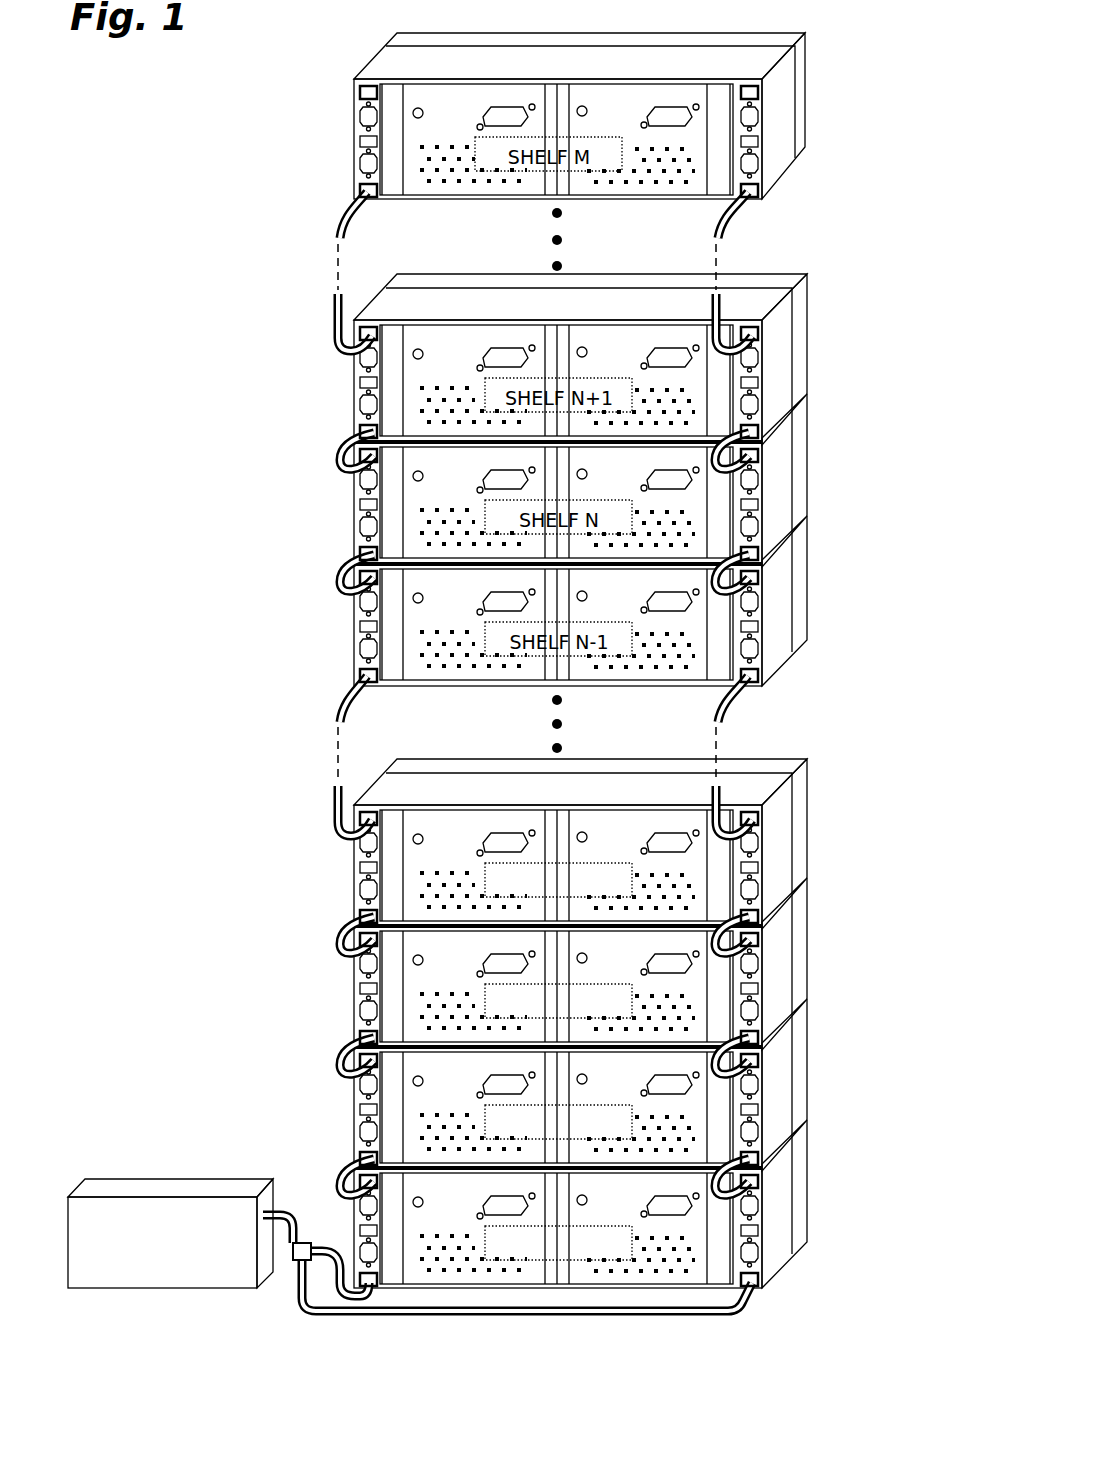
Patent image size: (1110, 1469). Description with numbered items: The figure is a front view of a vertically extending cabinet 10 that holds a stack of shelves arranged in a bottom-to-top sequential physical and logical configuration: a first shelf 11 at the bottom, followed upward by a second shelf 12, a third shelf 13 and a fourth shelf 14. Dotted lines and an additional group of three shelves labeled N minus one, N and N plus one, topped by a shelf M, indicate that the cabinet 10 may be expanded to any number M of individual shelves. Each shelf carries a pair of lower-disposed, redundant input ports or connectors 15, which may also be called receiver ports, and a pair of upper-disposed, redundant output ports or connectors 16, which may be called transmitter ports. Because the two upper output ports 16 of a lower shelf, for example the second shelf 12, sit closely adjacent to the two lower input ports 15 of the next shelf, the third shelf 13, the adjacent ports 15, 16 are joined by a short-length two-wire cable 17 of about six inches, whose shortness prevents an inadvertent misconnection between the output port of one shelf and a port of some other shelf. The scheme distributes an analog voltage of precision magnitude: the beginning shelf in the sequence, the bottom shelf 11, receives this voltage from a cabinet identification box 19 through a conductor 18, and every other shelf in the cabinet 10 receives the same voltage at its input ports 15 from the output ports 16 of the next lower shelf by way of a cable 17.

The cabinet 10 is at (128, 720).
The shelf-1 11 is at (807, 1240).
The shelf-2 12 is at (807, 1072).
The shelf-3 13 is at (807, 950).
The shelf-4 14 is at (780, 757).
The lower-disposed redundant input ports 15 is at (550, 715).
The upper-disposed redundant output ports 16 is at (550, 613).
The cable 17 is at (550, 751).
The conductor 18 is at (290, 1220).
The cabinet identification box 19 is at (163, 1183).